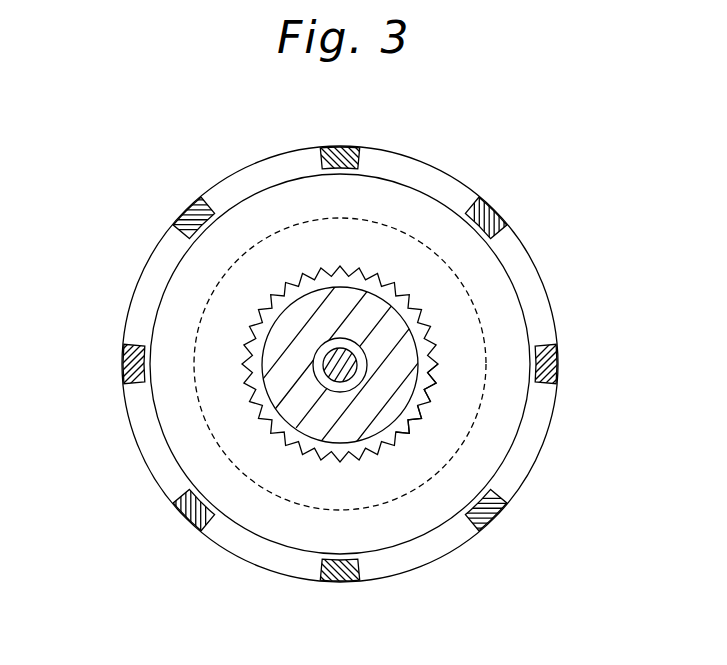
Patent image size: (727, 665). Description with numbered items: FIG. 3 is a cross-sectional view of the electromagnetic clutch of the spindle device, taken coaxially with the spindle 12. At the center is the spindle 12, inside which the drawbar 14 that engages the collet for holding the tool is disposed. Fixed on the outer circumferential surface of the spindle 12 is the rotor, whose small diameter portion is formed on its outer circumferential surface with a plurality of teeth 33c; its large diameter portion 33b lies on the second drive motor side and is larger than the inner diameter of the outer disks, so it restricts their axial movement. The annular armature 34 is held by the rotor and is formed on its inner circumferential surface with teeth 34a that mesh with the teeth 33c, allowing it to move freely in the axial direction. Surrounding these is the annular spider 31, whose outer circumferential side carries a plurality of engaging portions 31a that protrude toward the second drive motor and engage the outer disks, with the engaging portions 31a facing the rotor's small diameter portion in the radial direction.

The spindle 12 is at (400, 335).
The drawbar 14 is at (362, 362).
The annular spider 31 is at (142, 280).
The engaging portions 31a is at (343, 147).
The large diameter portion 33b is at (433, 389).
The teeth 33c is at (441, 427).
The annular armature 34 is at (177, 415).
The teeth 34a is at (275, 352).